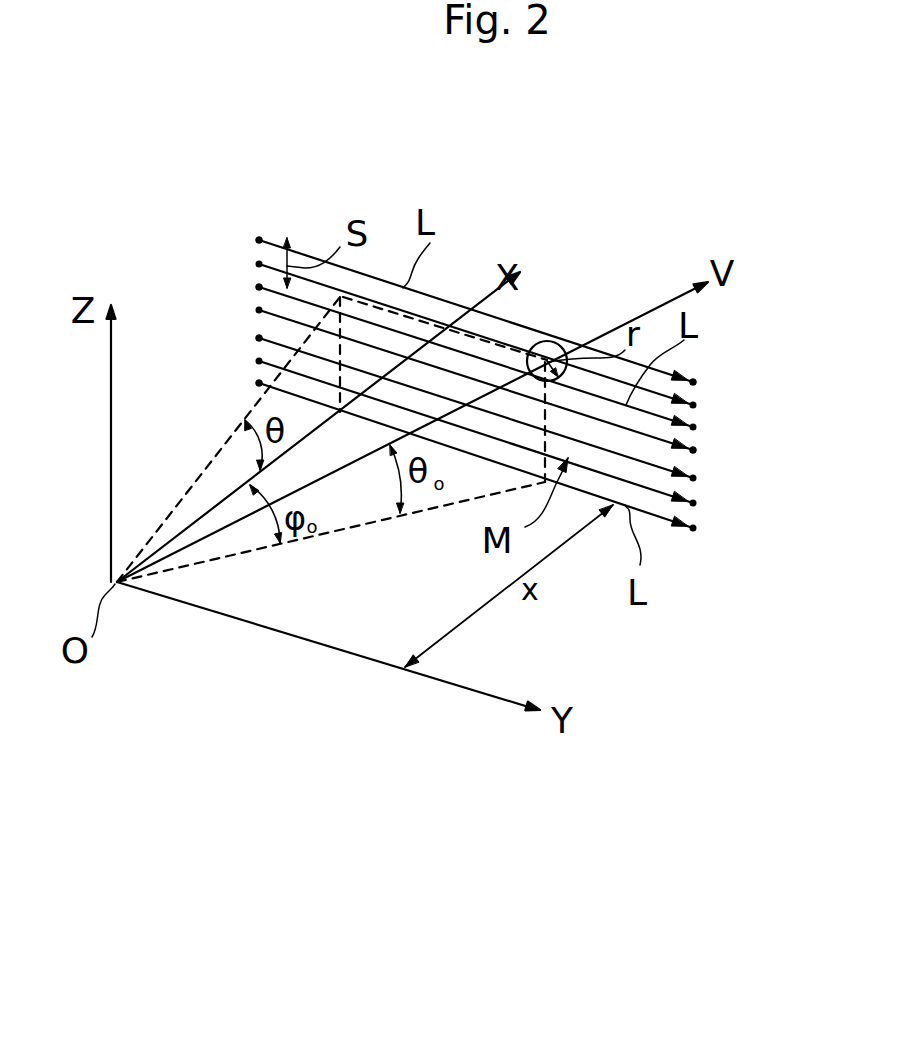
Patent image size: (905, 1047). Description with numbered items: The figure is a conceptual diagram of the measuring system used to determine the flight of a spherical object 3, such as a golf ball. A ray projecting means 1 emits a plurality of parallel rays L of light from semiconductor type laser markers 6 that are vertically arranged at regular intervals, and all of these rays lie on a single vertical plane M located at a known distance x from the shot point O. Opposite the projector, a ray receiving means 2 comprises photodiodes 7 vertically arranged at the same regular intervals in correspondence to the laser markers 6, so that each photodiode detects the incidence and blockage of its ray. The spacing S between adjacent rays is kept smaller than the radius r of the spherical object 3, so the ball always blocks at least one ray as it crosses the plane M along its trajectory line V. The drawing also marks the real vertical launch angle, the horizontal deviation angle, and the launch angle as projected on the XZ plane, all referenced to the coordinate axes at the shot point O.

The ray projecting means 1 is at (263, 219).
The ray receiving means 2 is at (710, 368).
The spherical object 3 is at (557, 337).
The laser markers 6 is at (262, 240).
The photodiodes 7 is at (693, 382).